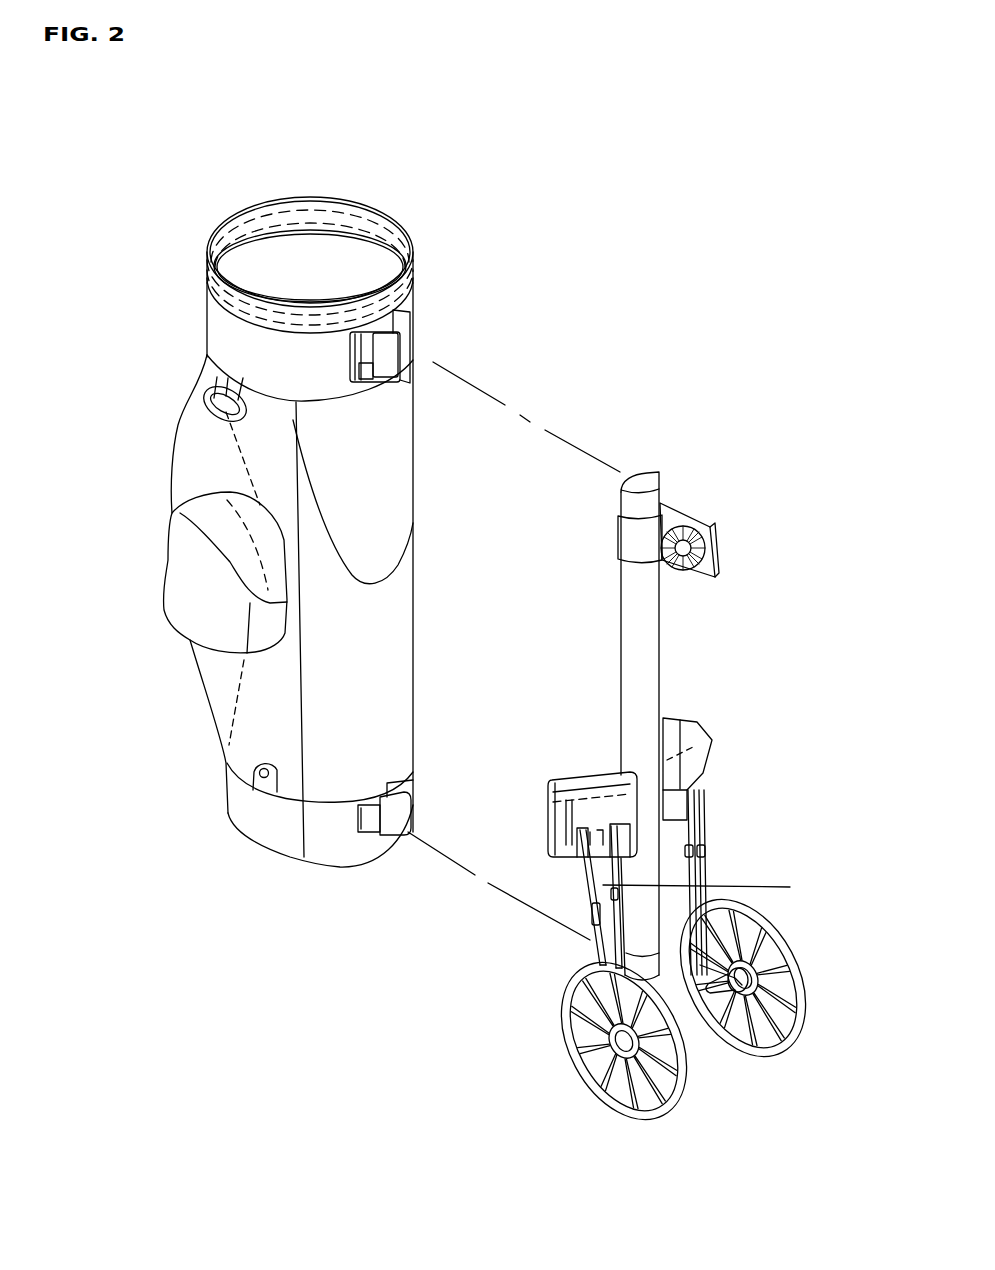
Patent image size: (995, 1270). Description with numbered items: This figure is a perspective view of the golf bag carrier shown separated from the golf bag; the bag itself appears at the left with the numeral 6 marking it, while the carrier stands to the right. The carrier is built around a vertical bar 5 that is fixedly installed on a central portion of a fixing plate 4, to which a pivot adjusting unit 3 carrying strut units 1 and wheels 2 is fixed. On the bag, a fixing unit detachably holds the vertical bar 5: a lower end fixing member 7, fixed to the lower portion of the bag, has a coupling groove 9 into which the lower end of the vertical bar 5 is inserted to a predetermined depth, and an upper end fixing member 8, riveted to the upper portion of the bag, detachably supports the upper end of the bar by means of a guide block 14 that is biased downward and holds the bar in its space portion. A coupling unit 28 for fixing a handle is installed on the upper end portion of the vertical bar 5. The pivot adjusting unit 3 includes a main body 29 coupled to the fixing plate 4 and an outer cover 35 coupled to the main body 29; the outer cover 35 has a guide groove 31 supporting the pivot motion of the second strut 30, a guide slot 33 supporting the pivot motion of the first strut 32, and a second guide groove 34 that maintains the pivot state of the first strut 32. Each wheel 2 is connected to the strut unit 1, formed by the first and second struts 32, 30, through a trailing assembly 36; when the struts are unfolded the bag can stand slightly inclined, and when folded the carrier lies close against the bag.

The strut unit 1 is at (733, 853).
The wheel 2 is at (822, 965).
The pivot adjusting unit 3 is at (736, 749).
The fixing plate 4 is at (668, 716).
The vertical bar 5 is at (656, 630).
The golf bag 6 is at (185, 472).
The lower end fixing member 7 is at (390, 820).
The upper end fixing member 8 is at (418, 336).
The coupling groove 9 is at (407, 781).
The guide block 14 is at (413, 358).
The coupling unit 28 is at (718, 550).
The main body 29 is at (556, 782).
The second strut 30 is at (790, 887).
The guide groove 31 is at (597, 830).
The first strut 32 is at (595, 890).
The guide slot 33 is at (580, 868).
The second guide groove 34 is at (570, 826).
The outer cover 35 is at (700, 725).
The trailing assembly 36 is at (700, 1010).